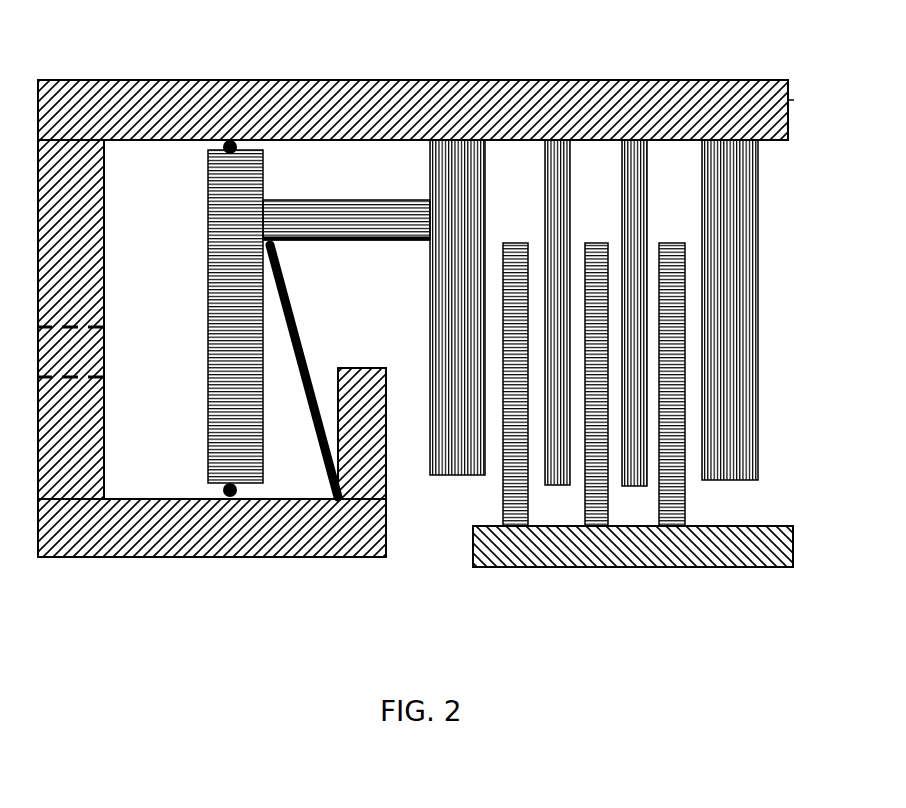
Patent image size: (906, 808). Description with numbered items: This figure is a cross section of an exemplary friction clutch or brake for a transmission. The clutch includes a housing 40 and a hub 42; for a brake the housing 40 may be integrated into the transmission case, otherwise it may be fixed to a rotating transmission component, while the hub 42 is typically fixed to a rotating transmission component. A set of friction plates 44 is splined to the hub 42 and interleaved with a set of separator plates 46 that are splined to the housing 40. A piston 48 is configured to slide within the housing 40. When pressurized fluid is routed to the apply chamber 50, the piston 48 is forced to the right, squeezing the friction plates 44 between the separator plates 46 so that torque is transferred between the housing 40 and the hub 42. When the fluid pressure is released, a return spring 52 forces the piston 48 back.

The housing 40 is at (338, 80).
The hub 42 is at (593, 570).
The friction plates 44 is at (502, 501).
The separator plates 46 is at (757, 345).
The piston 48 is at (208, 374).
The apply chamber 50 is at (167, 232).
The return spring 52 is at (283, 280).